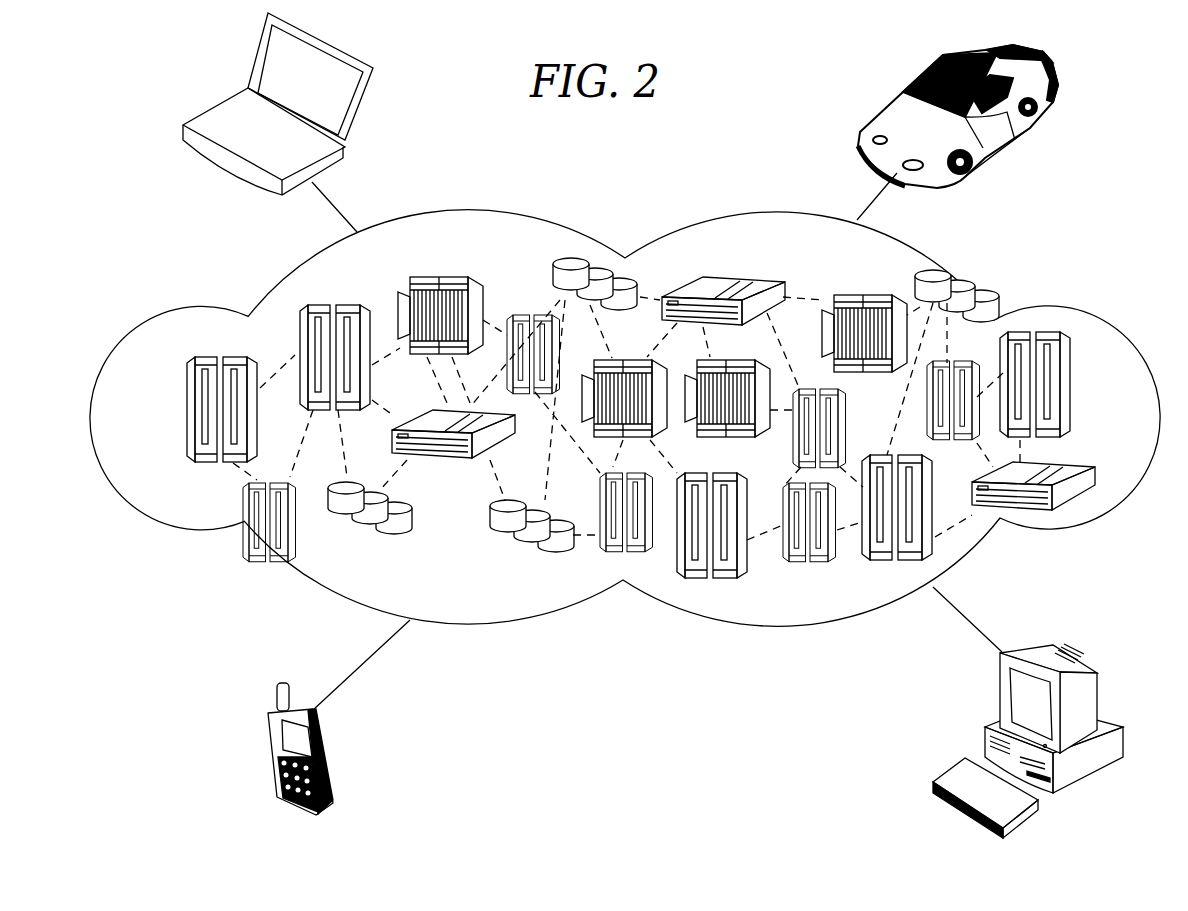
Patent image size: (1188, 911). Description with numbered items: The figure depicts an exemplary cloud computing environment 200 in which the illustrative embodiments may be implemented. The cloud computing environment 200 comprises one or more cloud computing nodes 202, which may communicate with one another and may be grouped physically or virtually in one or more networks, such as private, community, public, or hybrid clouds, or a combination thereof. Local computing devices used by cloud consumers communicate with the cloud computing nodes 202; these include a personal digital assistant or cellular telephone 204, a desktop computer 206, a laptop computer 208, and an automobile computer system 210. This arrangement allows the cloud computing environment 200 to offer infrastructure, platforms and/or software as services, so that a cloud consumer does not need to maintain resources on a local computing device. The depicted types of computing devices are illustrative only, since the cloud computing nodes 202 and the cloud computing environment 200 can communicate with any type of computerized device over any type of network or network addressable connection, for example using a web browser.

The cloud computing environment 200 is at (1103, 333).
The cloud computing nodes 202 is at (1057, 498).
The personal digital assistant (PDA) or cellular telephone 204 is at (333, 718).
The desktop computer 206 is at (990, 722).
The laptop computer 208 is at (240, 94).
The automobile computer system 210 is at (878, 98).